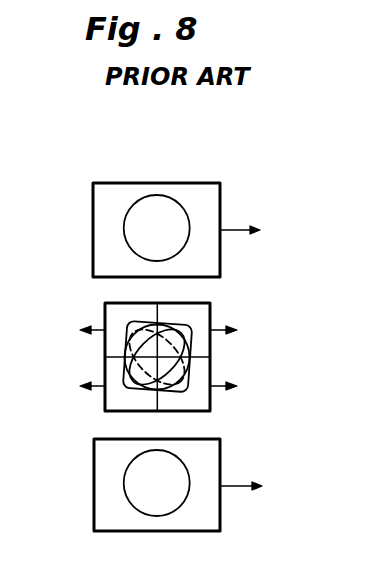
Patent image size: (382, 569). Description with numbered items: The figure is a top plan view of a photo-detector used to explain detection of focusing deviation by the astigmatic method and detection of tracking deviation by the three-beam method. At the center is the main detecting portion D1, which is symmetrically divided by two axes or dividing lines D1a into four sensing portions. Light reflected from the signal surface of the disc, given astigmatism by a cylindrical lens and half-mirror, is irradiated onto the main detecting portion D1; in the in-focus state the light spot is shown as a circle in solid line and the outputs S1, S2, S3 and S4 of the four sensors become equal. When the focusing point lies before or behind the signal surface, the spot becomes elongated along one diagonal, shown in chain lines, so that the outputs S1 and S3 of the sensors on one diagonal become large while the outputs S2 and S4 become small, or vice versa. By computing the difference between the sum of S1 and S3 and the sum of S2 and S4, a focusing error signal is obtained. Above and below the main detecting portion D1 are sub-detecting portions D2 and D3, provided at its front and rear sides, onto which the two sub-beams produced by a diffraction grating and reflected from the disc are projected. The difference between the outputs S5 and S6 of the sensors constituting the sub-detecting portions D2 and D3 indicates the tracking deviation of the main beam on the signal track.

The main detecting portion D1 is at (120, 303).
The dividing line D1a is at (210, 353).
The sub-detecting portion D2 is at (93, 228).
The sub-detecting portion D3 is at (94, 480).
The sensor output S1 is at (75, 331).
The sensor output S2 is at (75, 387).
The sensor output S3 is at (244, 387).
The sensor output S4 is at (244, 331).
The sub-detecting portion output S5 is at (261, 231).
The sub-detecting portion output S6 is at (262, 487).